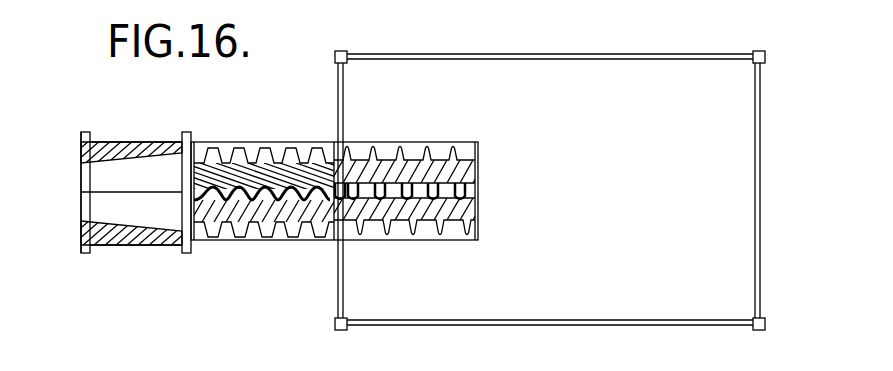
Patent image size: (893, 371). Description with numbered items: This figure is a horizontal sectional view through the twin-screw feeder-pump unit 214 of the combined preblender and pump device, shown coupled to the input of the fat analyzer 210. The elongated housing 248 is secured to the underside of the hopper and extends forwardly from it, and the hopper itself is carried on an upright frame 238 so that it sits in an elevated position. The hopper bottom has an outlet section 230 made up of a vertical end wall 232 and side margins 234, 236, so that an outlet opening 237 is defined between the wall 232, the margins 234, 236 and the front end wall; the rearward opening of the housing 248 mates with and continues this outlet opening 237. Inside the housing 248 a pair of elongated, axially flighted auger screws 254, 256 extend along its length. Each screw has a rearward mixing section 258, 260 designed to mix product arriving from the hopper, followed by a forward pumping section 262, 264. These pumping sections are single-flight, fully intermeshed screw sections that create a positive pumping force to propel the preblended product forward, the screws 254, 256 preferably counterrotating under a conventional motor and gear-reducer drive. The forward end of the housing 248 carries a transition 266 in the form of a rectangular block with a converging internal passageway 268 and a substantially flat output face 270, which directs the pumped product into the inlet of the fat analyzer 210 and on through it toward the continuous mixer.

The fat analyzer 210 is at (542, 368).
The twin-screw feeder-pump unit 214 is at (156, 285).
The outlet section 230 is at (505, 141).
The vertical end wall 232 is at (478, 187).
The side margin 234 is at (380, 143).
The side margin 236 is at (389, 241).
The outlet opening 237 is at (446, 142).
The upright frame 238 is at (710, 31).
The elongated housing 248 is at (238, 141).
The auger screw 254 is at (327, 135).
The auger screw 256 is at (290, 265).
The rearward mixing section 258 is at (410, 172).
The rearward mixing section 260 is at (457, 212).
The forward pumping section 262 is at (278, 141).
The forward pumping section 264 is at (252, 224).
The transition 266 is at (123, 236).
The converging internal passageway 268 is at (93, 214).
The output face 270 is at (82, 141).